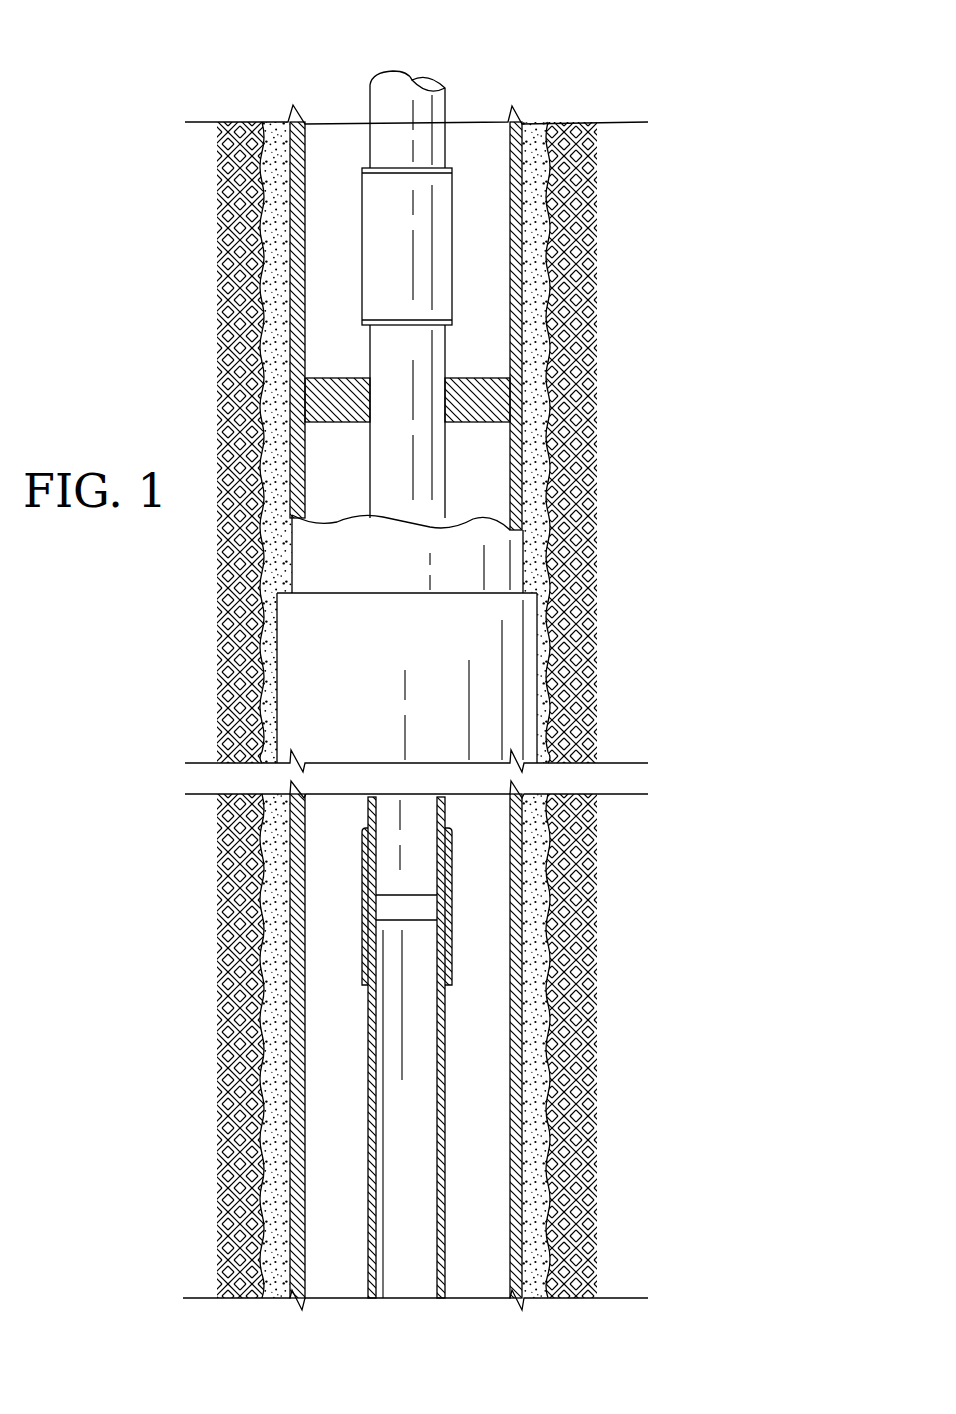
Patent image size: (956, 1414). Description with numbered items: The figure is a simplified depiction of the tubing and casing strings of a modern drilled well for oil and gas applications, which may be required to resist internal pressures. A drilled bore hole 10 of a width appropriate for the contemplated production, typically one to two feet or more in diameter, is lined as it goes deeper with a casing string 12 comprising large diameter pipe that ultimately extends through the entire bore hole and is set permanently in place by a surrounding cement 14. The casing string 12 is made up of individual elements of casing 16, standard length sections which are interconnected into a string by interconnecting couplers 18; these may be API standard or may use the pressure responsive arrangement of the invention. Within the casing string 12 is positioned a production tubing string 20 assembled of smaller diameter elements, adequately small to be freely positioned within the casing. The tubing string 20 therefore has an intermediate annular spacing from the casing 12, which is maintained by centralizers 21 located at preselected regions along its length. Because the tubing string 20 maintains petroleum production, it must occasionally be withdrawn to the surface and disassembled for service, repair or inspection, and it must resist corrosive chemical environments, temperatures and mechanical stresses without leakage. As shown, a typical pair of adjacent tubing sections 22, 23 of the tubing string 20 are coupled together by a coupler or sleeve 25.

The drilled bore hole 10 is at (552, 462).
The casing string 12 is at (309, 110).
The cement 14 is at (536, 132).
The individual elements of casing 16 is at (292, 152).
The interconnecting couplers 18 is at (298, 667).
The production tubing string 20 is at (349, 653).
The centralizers 21 is at (480, 380).
The tubing section 22 is at (427, 83).
The tubing section 23 is at (392, 350).
The coupler or sleeve 25 is at (382, 243).